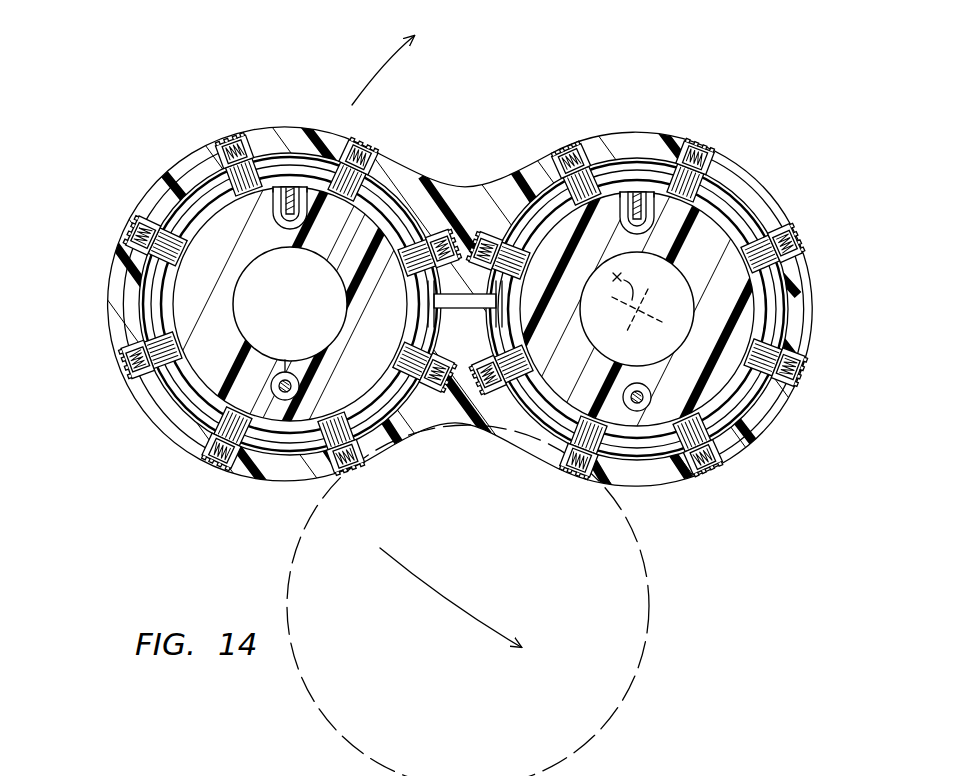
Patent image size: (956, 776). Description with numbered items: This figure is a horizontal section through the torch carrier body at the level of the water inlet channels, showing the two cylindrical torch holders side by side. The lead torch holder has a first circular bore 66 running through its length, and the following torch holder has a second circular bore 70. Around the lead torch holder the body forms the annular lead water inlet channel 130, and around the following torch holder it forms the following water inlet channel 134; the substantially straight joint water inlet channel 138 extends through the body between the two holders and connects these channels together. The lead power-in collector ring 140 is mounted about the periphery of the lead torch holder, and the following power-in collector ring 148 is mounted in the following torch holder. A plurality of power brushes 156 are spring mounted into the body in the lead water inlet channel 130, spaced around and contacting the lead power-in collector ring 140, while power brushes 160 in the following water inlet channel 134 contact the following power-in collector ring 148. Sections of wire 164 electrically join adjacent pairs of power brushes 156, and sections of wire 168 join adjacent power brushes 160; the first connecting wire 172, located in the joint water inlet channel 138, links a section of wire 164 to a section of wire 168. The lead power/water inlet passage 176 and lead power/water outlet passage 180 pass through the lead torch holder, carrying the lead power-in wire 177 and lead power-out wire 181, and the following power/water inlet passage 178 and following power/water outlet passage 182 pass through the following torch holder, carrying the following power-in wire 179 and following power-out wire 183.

The first circular bore 66 is at (688, 310).
The second circular bore 70 is at (240, 288).
The lead water inlet channel 130 is at (752, 215).
The following water inlet channel 134 is at (152, 214).
The joint water inlet channel 138 is at (425, 262).
The lead power-in collector ring 140 is at (752, 318).
The following power-in collector ring 148 is at (158, 300).
The power brushes 156 is at (778, 268).
The power brushes 160 is at (432, 186).
The sections of wire 164 is at (590, 165).
The sections of wire 168 is at (264, 165).
The first connecting wire 172 is at (482, 306).
The lead power/water inlet passage 176 is at (644, 238).
The lead power-in wire 177 is at (615, 212).
The following power/water inlet passage 178 is at (284, 230).
The following power-in wire 179 is at (270, 208).
The lead power/water outlet passage 180 is at (633, 390).
The lead power-out wire 181 is at (643, 388).
The following power/water outlet passage 182 is at (288, 378).
The following power-out wire 183 is at (282, 378).